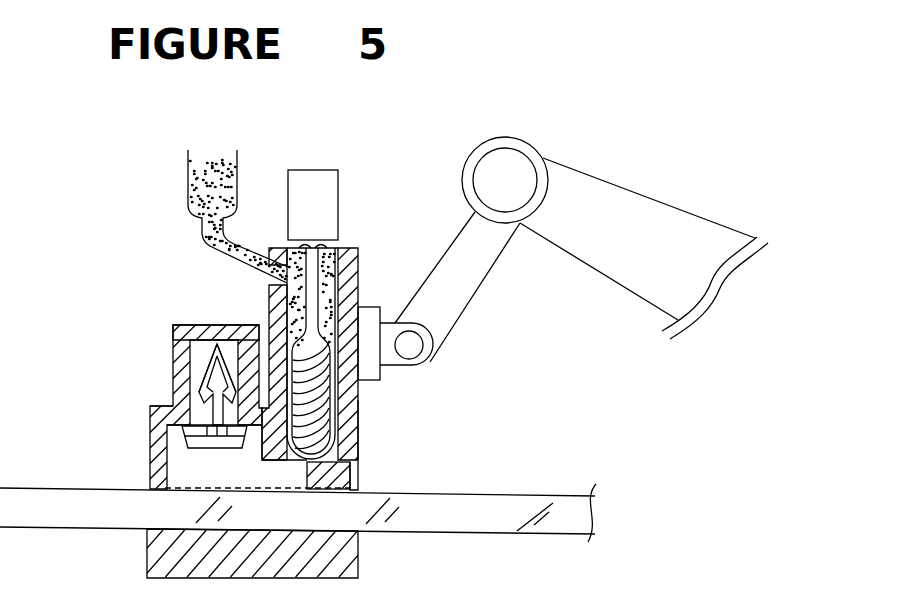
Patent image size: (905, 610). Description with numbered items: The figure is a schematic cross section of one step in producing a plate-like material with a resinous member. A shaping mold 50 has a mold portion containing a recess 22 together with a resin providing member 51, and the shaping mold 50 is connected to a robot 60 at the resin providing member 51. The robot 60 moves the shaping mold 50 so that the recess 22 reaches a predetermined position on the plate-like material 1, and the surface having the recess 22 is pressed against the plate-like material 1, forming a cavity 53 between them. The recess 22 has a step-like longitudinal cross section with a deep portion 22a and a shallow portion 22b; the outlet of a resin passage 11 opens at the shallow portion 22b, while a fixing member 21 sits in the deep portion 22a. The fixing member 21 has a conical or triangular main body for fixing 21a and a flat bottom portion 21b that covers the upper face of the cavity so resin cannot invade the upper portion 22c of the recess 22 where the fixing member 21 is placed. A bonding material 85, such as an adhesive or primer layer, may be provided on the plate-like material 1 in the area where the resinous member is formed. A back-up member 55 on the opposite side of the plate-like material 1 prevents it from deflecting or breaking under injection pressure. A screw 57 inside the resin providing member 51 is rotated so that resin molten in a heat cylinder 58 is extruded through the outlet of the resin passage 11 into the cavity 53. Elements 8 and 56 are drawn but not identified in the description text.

The plate-like material 1 is at (437, 513).
The feed passage 8 is at (269, 307).
The resin passage 11 is at (307, 462).
The fixing member 21 is at (198, 367).
The main body for fixing 21a is at (195, 344).
The bottom portion 21b is at (152, 406).
The recess 22 is at (350, 476).
The deep portion 22a is at (183, 440).
The shallow portion 22b is at (360, 455).
The upper portion of the recess 22c is at (188, 326).
The shaping mold 50 is at (170, 328).
The resin providing member 51 is at (352, 248).
The cavity 53 is at (261, 409).
The back-up member 55 is at (163, 552).
The piston 56 is at (306, 200).
The screw 57 is at (313, 405).
The heat cylinder 58 is at (347, 393).
The robot 60 is at (682, 201).
The bonding material 85 is at (185, 486).